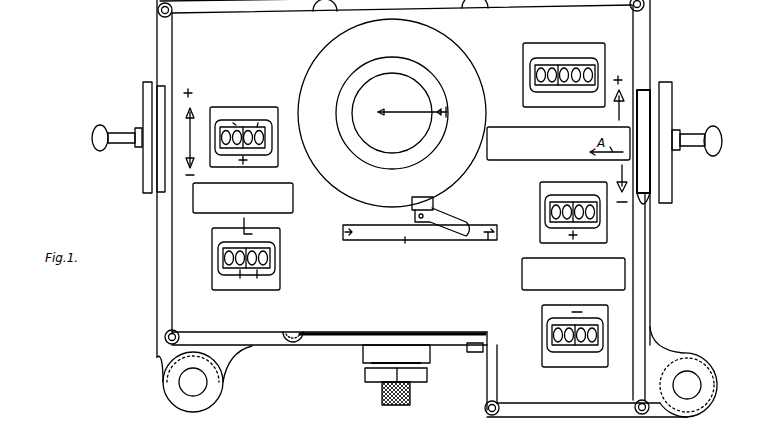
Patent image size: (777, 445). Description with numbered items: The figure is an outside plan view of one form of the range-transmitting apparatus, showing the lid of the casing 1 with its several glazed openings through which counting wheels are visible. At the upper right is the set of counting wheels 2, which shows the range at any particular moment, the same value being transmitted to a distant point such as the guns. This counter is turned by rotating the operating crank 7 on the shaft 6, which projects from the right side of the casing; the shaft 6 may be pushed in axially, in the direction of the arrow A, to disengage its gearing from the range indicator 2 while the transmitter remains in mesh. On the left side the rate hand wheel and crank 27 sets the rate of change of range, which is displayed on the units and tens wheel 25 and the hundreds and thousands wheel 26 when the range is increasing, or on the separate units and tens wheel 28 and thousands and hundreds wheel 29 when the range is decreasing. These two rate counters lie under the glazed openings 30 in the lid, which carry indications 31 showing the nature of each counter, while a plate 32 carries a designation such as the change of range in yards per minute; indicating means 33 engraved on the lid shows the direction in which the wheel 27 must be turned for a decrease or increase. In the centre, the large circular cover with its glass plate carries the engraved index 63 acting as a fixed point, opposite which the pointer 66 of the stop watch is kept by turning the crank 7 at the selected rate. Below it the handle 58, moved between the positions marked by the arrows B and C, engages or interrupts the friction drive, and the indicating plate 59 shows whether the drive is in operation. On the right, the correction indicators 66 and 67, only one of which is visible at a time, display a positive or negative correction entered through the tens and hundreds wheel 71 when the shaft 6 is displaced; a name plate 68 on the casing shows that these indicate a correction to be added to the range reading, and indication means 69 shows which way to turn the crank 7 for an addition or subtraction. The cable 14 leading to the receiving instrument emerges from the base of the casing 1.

The casing 1 is at (662, 298).
The counting wheels (range indicator) 2 is at (598, 70).
The shaft 6 is at (658, 138).
The operating crank 7 is at (698, 143).
The cable 14 is at (406, 394).
The units and tens wheel 25 is at (259, 118).
The hundreds and thousands wheel 26 is at (227, 118).
The rate hand wheel and crank 27 is at (122, 140).
The units and tens wheel 28 is at (260, 280).
The thousands and hundreds wheel 29 is at (230, 280).
The glazed openings 30 is at (272, 158).
The indications 31 is at (245, 165).
The plate 32 is at (288, 198).
The indicating means 33 is at (197, 122).
The handle 58 is at (453, 224).
The indicating plate 59 is at (417, 243).
The engraved index 63 is at (444, 110).
The indicator / stop watch pointer 66 is at (398, 112).
The indicator 67 is at (605, 312).
The name plate 68 is at (607, 287).
The indication means 69 is at (617, 117).
The tens and hundreds wheel 71 is at (581, 223).